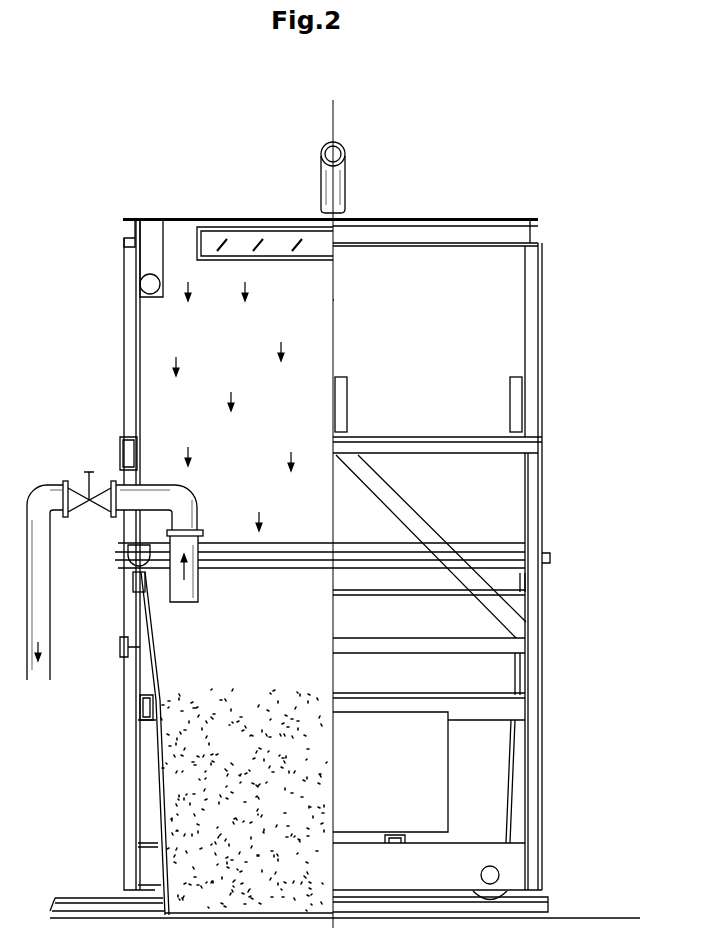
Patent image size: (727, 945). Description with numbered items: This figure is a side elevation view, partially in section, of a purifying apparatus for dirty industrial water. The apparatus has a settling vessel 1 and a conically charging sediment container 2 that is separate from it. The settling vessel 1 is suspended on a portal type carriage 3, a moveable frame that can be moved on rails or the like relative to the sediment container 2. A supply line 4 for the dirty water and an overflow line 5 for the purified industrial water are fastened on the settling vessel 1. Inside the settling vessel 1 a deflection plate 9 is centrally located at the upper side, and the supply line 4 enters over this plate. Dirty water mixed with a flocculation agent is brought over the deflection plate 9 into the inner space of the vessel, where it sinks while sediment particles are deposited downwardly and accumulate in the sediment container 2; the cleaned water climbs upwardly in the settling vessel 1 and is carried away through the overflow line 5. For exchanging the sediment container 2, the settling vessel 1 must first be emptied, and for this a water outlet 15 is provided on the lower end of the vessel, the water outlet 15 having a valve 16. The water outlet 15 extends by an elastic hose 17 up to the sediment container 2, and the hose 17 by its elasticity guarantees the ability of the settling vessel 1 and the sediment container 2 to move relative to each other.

The settling vessel 1 is at (437, 268).
The sediment container 2 is at (436, 785).
The carriage 3 is at (130, 778).
The supply line 4 is at (342, 182).
The overflow line 5 is at (152, 285).
The deflection plate 9 is at (243, 237).
The water outlet 15 is at (128, 500).
The valve 16 is at (78, 490).
The flexible hose 17 is at (183, 603).